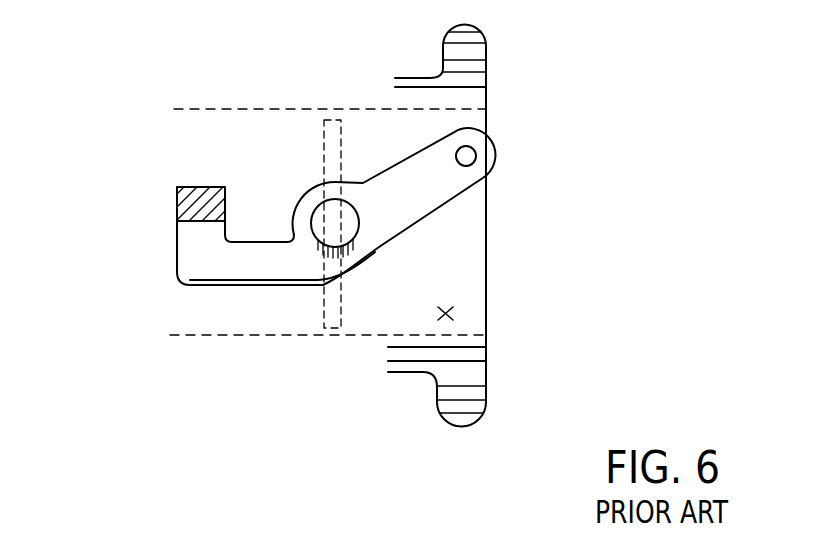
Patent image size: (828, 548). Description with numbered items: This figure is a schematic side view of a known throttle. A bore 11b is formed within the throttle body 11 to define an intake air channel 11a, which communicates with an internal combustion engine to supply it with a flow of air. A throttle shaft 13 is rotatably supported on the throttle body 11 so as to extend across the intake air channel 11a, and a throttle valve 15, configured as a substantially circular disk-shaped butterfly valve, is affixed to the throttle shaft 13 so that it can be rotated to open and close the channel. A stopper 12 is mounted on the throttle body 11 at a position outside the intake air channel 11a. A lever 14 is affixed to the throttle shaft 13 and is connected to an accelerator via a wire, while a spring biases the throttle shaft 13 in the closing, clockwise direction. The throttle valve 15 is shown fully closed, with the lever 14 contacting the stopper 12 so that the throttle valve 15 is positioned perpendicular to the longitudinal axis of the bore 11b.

The throttle body 11 is at (488, 62).
The intake air channel 11a is at (456, 312).
The bore 11b is at (222, 109).
The stopper 12 is at (176, 218).
The throttle shaft 13 is at (358, 228).
The lever 14 is at (448, 200).
The throttle valve 15 is at (330, 142).